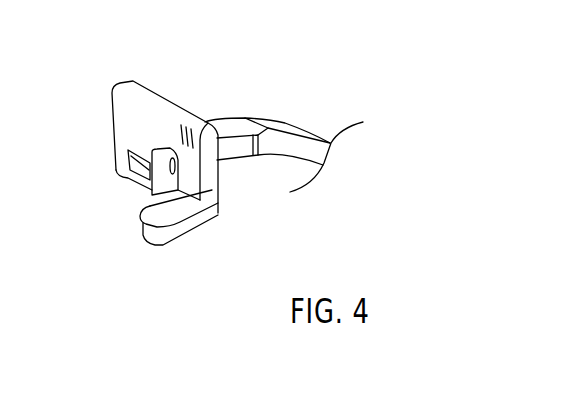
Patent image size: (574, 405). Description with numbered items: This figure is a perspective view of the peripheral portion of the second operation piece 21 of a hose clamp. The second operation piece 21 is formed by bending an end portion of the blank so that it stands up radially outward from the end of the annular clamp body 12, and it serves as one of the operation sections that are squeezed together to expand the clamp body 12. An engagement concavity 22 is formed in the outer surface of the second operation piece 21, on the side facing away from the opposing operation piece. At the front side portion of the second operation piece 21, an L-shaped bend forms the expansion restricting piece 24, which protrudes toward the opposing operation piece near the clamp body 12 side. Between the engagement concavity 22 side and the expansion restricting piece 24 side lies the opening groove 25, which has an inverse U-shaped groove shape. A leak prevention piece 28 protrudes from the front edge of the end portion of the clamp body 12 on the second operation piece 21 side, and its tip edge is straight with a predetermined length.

The second operation piece 21 is at (120, 103).
The engagement concavity 22 is at (148, 170).
The expansion restricting piece 24 is at (190, 225).
The opening groove 25 is at (148, 147).
The leak prevention piece 28 is at (232, 152).
The clamp body 12 is at (235, 123).